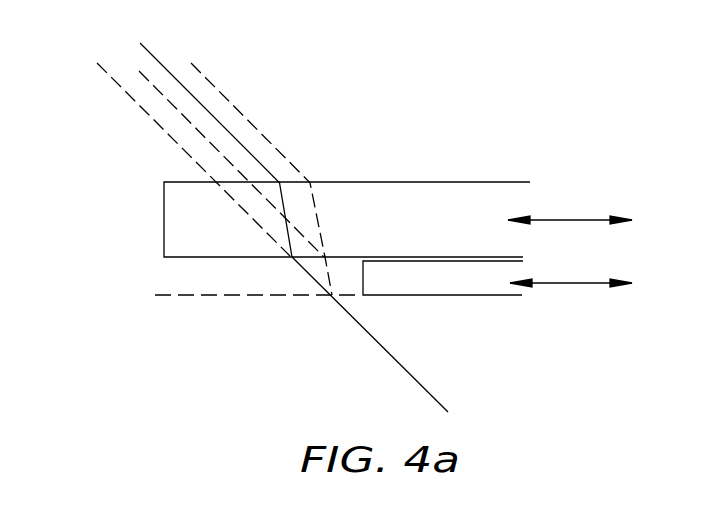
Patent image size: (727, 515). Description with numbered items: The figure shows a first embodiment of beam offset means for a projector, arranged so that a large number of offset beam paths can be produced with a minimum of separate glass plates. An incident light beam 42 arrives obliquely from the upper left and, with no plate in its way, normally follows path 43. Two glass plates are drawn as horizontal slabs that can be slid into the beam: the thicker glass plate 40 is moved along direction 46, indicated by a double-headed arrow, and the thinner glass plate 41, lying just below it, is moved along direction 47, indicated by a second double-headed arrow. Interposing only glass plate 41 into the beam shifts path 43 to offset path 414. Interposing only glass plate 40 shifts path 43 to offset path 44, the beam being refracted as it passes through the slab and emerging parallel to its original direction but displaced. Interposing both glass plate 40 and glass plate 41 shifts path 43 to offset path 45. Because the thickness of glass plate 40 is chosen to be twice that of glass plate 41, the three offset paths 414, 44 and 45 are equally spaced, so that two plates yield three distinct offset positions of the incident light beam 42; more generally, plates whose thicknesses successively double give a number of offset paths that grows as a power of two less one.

The glass plate 40 is at (363, 182).
The glass plate 41 is at (444, 295).
The incident light beam 42 is at (410, 373).
The path 43 is at (116, 80).
The offset path 44 is at (160, 60).
The offset path 45 is at (191, 62).
The direction 46 is at (573, 220).
The direction 47 is at (587, 283).
The offset path 414 is at (139, 69).